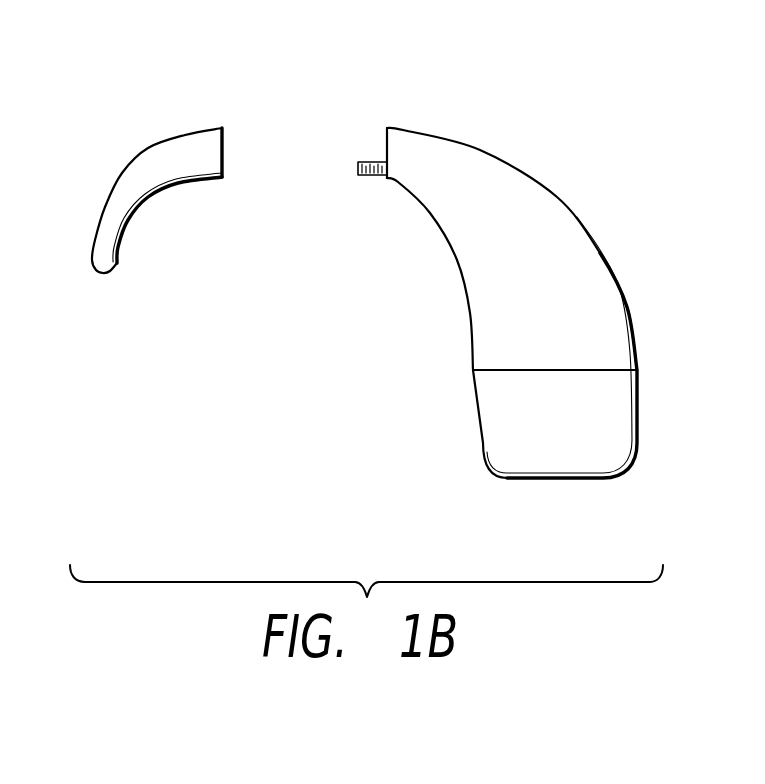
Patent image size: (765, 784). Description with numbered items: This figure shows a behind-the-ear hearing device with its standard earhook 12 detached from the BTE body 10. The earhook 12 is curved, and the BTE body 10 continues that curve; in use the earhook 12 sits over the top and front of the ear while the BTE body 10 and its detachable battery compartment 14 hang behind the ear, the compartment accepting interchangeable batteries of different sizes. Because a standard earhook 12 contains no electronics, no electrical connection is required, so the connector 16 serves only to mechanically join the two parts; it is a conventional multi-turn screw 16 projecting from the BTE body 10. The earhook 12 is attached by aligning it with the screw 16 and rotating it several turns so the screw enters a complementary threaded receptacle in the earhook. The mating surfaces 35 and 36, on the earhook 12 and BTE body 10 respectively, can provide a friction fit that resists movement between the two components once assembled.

The BTE body 10 is at (543, 208).
The earhook 12 is at (170, 153).
The battery compartment 14 is at (568, 450).
The connector 16 is at (371, 178).
The surface 35 is at (226, 140).
The surface 36 is at (385, 138).